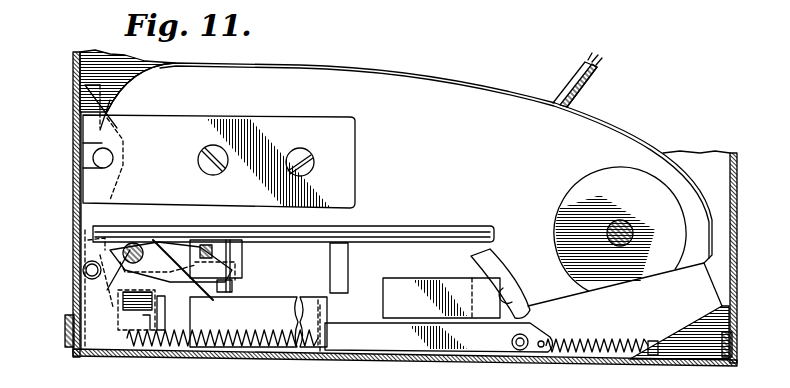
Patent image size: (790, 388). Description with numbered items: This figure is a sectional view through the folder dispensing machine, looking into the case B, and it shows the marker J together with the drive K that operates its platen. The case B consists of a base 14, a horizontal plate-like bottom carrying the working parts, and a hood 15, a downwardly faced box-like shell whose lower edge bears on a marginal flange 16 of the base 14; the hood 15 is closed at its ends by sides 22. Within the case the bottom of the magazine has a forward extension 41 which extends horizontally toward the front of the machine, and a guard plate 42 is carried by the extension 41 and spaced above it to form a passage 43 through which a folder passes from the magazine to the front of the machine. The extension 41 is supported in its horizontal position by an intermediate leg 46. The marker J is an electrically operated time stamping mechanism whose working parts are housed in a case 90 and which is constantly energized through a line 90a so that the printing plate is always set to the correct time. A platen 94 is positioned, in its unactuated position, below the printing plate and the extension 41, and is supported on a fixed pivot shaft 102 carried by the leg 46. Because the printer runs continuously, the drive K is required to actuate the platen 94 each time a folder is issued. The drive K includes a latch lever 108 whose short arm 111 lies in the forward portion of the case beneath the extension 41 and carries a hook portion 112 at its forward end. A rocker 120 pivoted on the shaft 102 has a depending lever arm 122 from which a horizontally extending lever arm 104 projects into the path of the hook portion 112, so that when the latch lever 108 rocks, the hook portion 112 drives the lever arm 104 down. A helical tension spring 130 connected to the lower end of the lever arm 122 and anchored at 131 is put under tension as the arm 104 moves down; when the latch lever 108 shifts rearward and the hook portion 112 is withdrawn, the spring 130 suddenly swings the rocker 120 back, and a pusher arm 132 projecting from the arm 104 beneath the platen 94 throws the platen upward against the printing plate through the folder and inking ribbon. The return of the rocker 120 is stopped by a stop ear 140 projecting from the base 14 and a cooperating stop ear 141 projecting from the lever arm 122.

The case B is at (70, 72).
The marker J is at (406, 71).
The base 14 is at (574, 366).
The hood 15 is at (738, 249).
The marginal flange 16 is at (734, 341).
The sides 22 is at (74, 96).
The forward extension 41 is at (386, 247).
The guard plate 42 is at (424, 230).
The passage 43 is at (470, 234).
The intermediate leg 46 is at (360, 252).
The case 90 is at (418, 211).
The line 90a is at (587, 83).
The platen 94 is at (222, 247).
The pivot shaft 102 is at (110, 240).
The lever arm 104 is at (183, 253).
The latch lever 108 is at (244, 251).
The short arm 111 is at (212, 283).
The hook portion 112 is at (240, 245).
The rocker 120 is at (101, 298).
The lever arm 122 is at (122, 310).
The helical tension spring 130 is at (240, 347).
The anchor 131 is at (326, 336).
The pusher arm 132 is at (208, 293).
The stop ear 140 is at (161, 328).
The stop ear 141 is at (146, 320).
The drive K is at (240, 290).